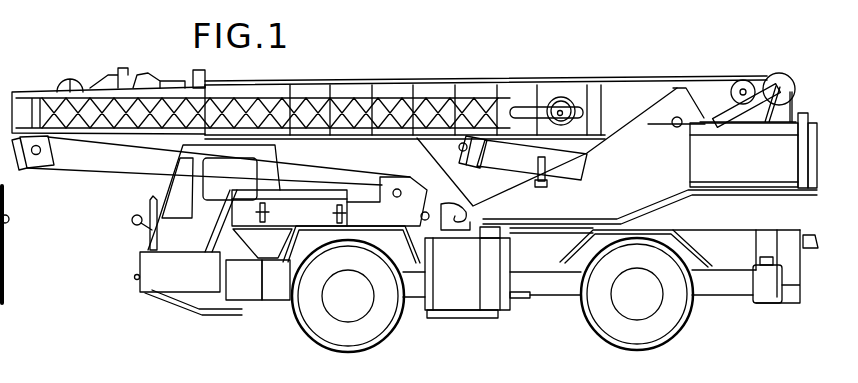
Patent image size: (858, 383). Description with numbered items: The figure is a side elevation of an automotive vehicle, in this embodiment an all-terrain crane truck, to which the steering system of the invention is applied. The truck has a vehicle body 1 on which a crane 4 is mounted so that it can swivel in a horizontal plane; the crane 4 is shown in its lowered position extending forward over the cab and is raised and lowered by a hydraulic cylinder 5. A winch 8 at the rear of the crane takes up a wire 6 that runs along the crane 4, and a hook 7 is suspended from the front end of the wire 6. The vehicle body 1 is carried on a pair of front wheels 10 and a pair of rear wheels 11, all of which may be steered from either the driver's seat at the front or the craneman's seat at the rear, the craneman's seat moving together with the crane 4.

The vehicle body 1 is at (13, 279).
The crane 4 is at (360, 78).
The hydraulic cylinder 5 is at (502, 150).
The wire 6 is at (675, 76).
The hook 7 is at (443, 212).
The winch 8 is at (799, 111).
The front wheels 10 is at (373, 330).
The rear wheels 11 is at (676, 320).